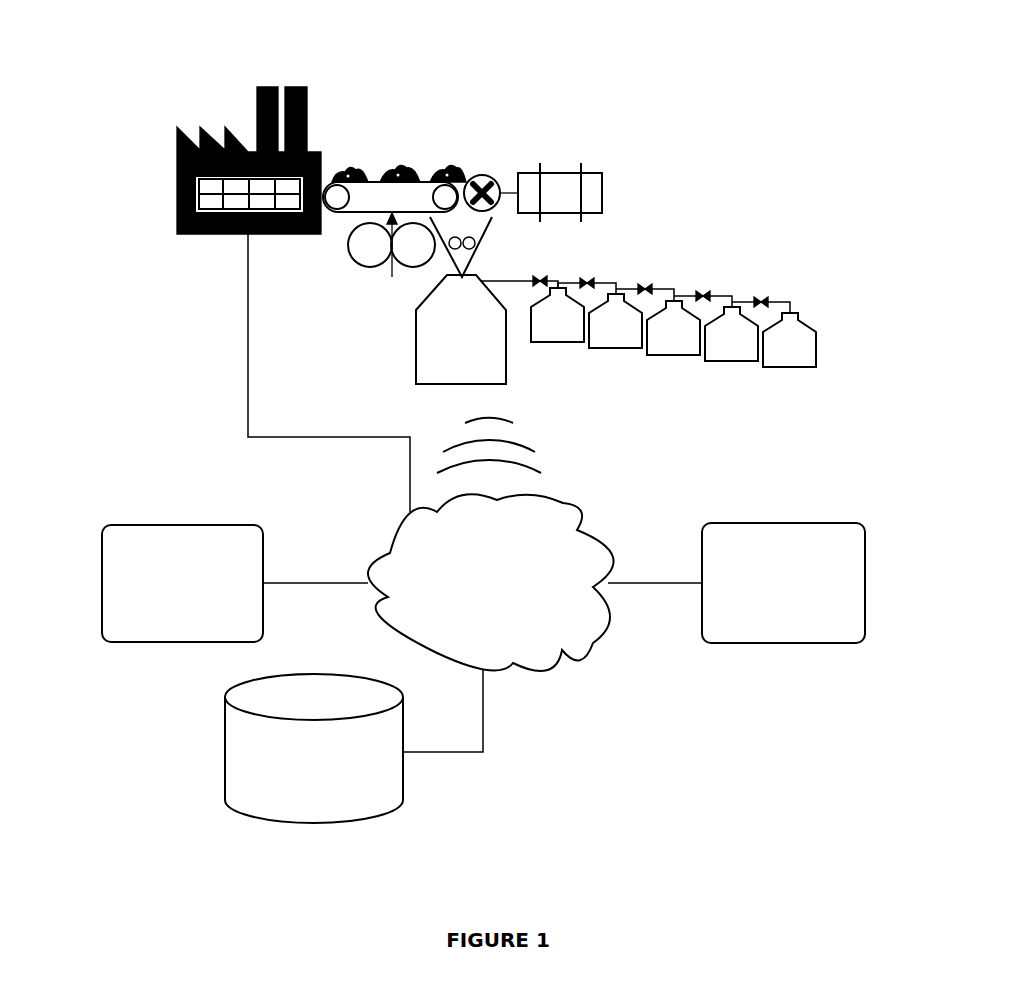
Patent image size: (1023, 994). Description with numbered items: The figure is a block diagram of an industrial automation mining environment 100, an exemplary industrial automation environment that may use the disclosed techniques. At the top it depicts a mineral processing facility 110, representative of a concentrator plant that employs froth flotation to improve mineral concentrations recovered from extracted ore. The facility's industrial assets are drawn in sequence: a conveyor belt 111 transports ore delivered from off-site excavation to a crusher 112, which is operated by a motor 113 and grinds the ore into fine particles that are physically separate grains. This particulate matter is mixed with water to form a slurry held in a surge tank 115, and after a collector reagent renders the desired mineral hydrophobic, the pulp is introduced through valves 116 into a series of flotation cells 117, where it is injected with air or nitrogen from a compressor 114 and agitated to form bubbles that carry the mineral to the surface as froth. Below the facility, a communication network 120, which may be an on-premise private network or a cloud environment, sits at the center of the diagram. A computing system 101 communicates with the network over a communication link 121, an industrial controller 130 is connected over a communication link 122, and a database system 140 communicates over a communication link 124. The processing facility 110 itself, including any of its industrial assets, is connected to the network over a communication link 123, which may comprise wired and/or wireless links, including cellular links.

The industrial automation mining environment 100 is at (938, 42).
The mineral processing facility 110 is at (177, 178).
The conveyor belt 111 is at (328, 182).
The crusher 112 is at (478, 176).
The motor 113 is at (602, 193).
The compressor 114 is at (350, 243).
The surge tank 115 is at (416, 320).
The valves 116 is at (543, 275).
The flotation cells 117 is at (531, 337).
The communication network 120 is at (491, 544).
The communication link 121 is at (300, 582).
The communication link 122 is at (627, 582).
The communication link 123 is at (318, 437).
The communication link 124 is at (415, 752).
The computing system 101 is at (182, 583).
The industrial controller 130 is at (783, 583).
The database system 140 is at (314, 748).